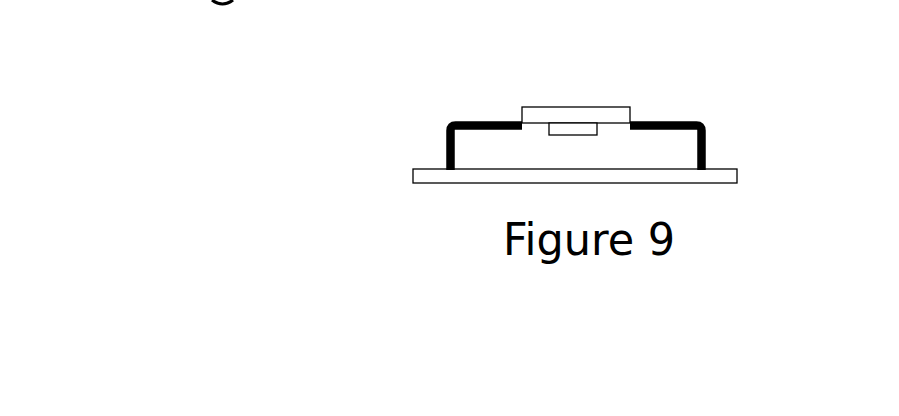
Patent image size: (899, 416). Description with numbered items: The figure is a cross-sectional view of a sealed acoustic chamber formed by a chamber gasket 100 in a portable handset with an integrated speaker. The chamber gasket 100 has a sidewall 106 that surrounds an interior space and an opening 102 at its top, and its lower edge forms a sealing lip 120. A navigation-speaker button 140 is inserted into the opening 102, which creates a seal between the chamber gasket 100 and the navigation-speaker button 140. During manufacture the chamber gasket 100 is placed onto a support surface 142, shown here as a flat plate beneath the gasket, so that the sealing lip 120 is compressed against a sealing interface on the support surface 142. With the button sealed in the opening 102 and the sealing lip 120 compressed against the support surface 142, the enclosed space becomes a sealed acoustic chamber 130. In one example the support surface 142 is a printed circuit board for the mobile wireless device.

The chamber gasket 100 is at (737, 82).
The opening 102 is at (600, 131).
The sidewall 106 is at (447, 150).
The sealing lip 120 is at (707, 169).
The sealed acoustic chamber 130 is at (518, 149).
The navigation-speaker button 140 is at (522, 118).
The support surface 142 is at (737, 178).